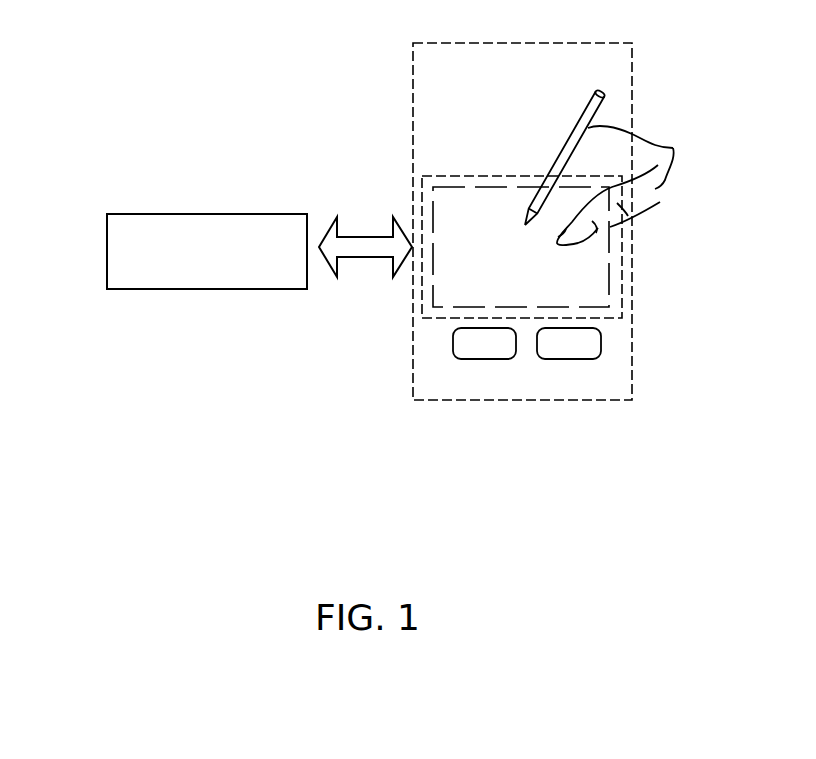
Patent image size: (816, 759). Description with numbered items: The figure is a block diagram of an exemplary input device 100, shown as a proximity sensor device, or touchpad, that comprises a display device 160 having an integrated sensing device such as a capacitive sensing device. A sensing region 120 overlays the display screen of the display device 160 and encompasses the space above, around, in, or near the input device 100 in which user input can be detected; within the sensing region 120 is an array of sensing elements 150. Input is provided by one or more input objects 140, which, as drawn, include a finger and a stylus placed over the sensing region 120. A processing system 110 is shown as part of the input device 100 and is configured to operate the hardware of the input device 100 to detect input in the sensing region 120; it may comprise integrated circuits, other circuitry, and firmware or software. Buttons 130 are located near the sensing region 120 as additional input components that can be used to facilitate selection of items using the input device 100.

The input device 100 is at (355, 70).
The processing system 110 is at (107, 247).
The sensing region 120 is at (633, 262).
The buttons 130 is at (487, 359).
The input objects 140 is at (665, 152).
The sensing elements 150 is at (473, 187).
The display device 160 is at (633, 70).